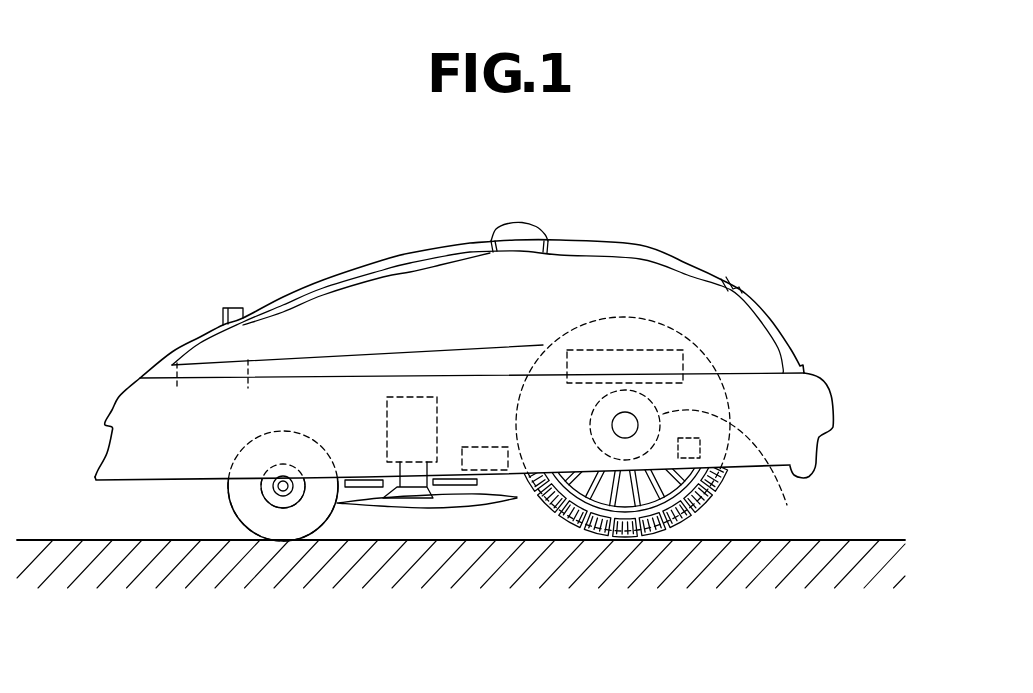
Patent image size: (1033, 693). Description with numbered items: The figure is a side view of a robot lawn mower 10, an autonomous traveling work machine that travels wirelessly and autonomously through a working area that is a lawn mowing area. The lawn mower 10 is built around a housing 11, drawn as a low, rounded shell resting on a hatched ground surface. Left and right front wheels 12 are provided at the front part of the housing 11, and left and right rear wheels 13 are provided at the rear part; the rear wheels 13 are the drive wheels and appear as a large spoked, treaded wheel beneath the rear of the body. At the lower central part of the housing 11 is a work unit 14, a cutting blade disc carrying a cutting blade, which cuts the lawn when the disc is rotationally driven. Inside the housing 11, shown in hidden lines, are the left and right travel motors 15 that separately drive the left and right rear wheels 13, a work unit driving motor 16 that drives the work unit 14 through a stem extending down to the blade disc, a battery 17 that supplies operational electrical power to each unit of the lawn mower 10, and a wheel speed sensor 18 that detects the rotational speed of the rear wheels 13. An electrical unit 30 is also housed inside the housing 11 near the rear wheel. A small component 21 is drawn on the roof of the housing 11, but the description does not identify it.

The robot lawn mower 10 is at (165, 238).
The housing 11 is at (282, 321).
The front wheels 12 is at (307, 519).
The rear wheels 13 is at (663, 513).
The work unit 14 is at (475, 514).
The travel motors 15 is at (734, 473).
The work unit driving motor 16 is at (385, 423).
The battery 17 is at (473, 445).
The wheel speed sensor 18 is at (702, 450).
The camera 21 is at (222, 322).
The electrical unit 30 is at (708, 355).